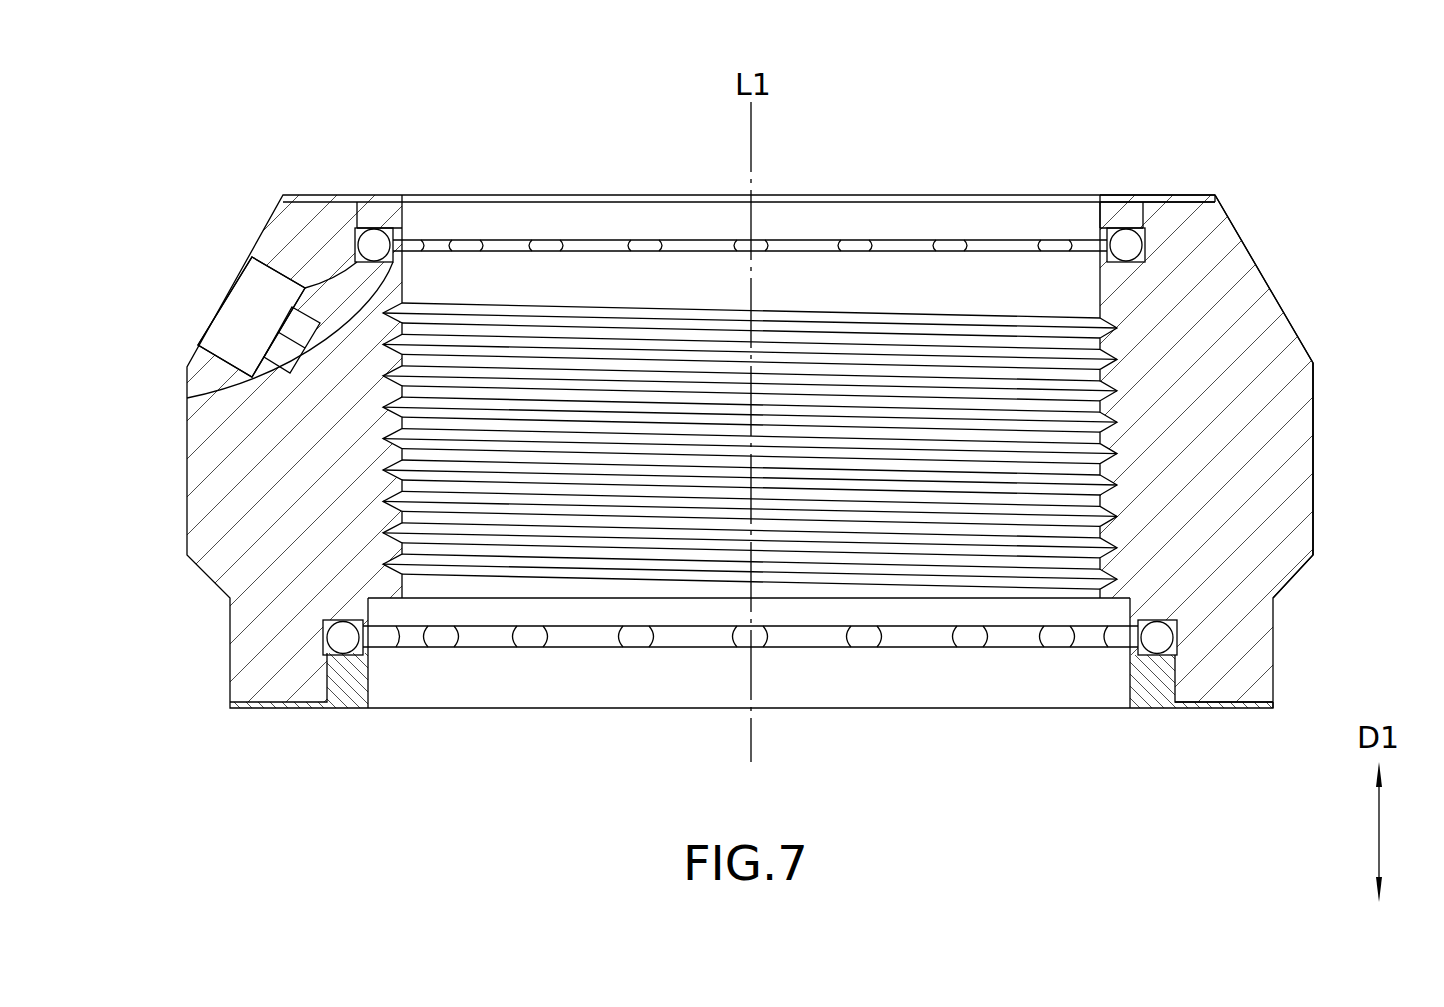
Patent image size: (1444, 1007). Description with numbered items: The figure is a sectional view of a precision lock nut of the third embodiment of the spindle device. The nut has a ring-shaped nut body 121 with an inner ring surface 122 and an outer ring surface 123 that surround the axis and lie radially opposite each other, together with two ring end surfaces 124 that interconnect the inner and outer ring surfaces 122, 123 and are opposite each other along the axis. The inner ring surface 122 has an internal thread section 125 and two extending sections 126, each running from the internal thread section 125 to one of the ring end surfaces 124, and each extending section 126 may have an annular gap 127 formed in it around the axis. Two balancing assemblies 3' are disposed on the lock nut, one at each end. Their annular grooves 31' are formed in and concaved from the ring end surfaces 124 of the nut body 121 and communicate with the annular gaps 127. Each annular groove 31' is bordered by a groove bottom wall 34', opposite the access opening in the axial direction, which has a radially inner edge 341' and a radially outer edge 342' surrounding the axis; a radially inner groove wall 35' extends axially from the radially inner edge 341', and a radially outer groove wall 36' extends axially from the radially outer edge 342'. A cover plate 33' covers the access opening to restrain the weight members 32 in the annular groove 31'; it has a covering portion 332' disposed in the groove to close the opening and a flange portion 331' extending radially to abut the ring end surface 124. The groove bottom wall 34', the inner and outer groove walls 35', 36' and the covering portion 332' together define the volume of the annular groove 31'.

The balancing assembly 3' is at (750, 464).
The annular groove 31' is at (366, 171).
The weight member 32 is at (384, 235).
The cover plate 33' is at (1086, 161).
The flange portion 331' is at (1157, 141).
The covering portion 332' is at (1071, 161).
The groove bottom wall 34' is at (209, 339).
The radially inner edge 341' is at (201, 339).
The radially outer edge 342' is at (219, 324).
The radially inner groove wall 35' is at (385, 204).
The radially outer groove wall 36' is at (688, 421).
The nut body 121 is at (1314, 416).
The inner ring surface 122 is at (750, 553).
The outer ring surface 123 is at (1314, 460).
The ring end surface 124 is at (1197, 203).
The internal thread section 125 is at (1003, 508).
The extending section 126 is at (697, 278).
The annular gap 127 is at (516, 240).